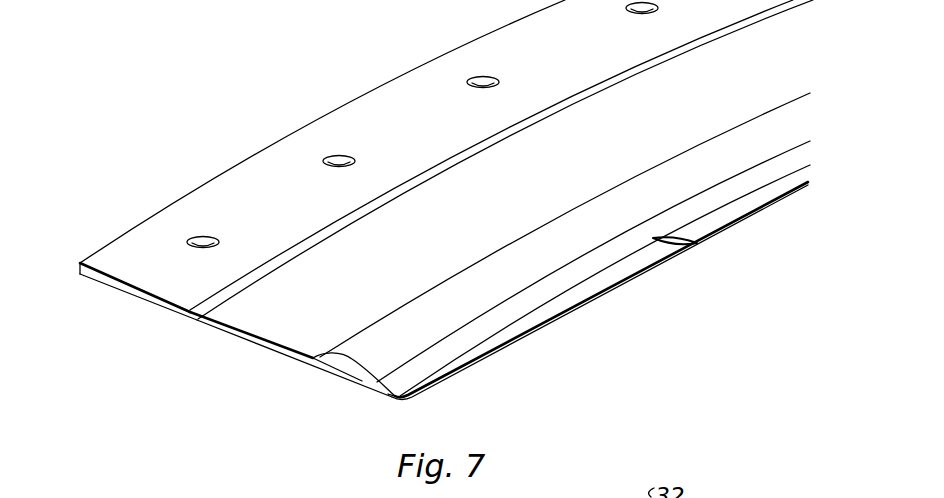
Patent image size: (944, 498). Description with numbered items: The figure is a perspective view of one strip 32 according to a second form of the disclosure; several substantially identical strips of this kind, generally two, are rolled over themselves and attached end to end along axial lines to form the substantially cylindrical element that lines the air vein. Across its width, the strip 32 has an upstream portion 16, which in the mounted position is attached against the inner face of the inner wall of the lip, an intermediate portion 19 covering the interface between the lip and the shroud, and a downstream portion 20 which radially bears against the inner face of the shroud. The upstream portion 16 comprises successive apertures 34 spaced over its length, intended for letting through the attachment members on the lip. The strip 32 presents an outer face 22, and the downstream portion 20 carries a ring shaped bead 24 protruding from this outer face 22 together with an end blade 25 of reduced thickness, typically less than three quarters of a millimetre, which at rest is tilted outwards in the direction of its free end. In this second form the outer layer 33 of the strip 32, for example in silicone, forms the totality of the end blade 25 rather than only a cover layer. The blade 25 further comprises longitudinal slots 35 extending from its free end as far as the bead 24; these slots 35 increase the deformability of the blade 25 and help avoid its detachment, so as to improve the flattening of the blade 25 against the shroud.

The upstream portion 16 is at (121, 305).
The intermediate portion 19 is at (237, 352).
The downstream portion 20 is at (362, 394).
The outer face 22 is at (394, 110).
The ring shaped bead 24 is at (777, 133).
The end blade 25 is at (547, 312).
The strip 32 is at (248, 83).
The outer layer 33 is at (343, 367).
The apertures 34 is at (201, 247).
The longitudinal slots 35 is at (697, 243).